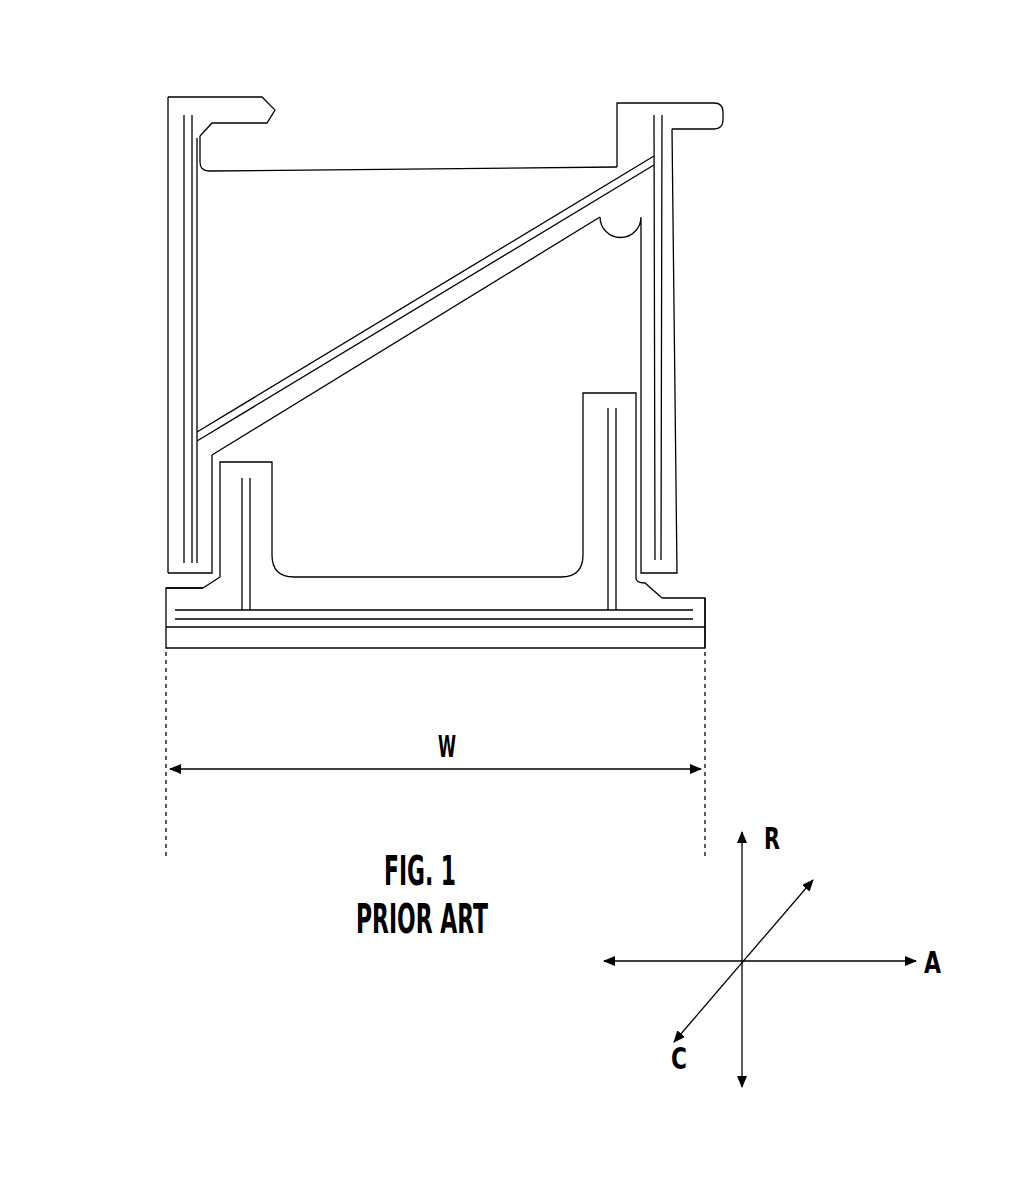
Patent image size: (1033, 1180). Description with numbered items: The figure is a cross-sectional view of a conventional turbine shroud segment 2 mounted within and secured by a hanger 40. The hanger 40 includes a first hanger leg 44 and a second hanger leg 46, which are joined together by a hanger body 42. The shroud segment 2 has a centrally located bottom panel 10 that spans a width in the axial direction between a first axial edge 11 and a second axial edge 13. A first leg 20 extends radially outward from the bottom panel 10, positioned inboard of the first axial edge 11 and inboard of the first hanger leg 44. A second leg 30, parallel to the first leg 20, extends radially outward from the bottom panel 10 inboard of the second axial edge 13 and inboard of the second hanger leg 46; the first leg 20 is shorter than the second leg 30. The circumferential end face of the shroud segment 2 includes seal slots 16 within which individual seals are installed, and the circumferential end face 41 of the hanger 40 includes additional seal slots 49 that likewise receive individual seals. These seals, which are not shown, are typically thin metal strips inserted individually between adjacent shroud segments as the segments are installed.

The turbine shroud segment 2 is at (154, 590).
The bottom panel 10 is at (446, 573).
The first axial edge 11 is at (166, 622).
The second axial edge 13 is at (705, 621).
The seal slots 16 is at (607, 573).
The first leg 20 is at (272, 515).
The second leg 30 is at (636, 490).
The hanger 40 is at (152, 124).
The circumferential end face 41 is at (487, 191).
The hanger body 42 is at (387, 189).
The first hanger leg 44 is at (168, 475).
The second hanger leg 46 is at (673, 366).
The seal slots 49 is at (660, 247).